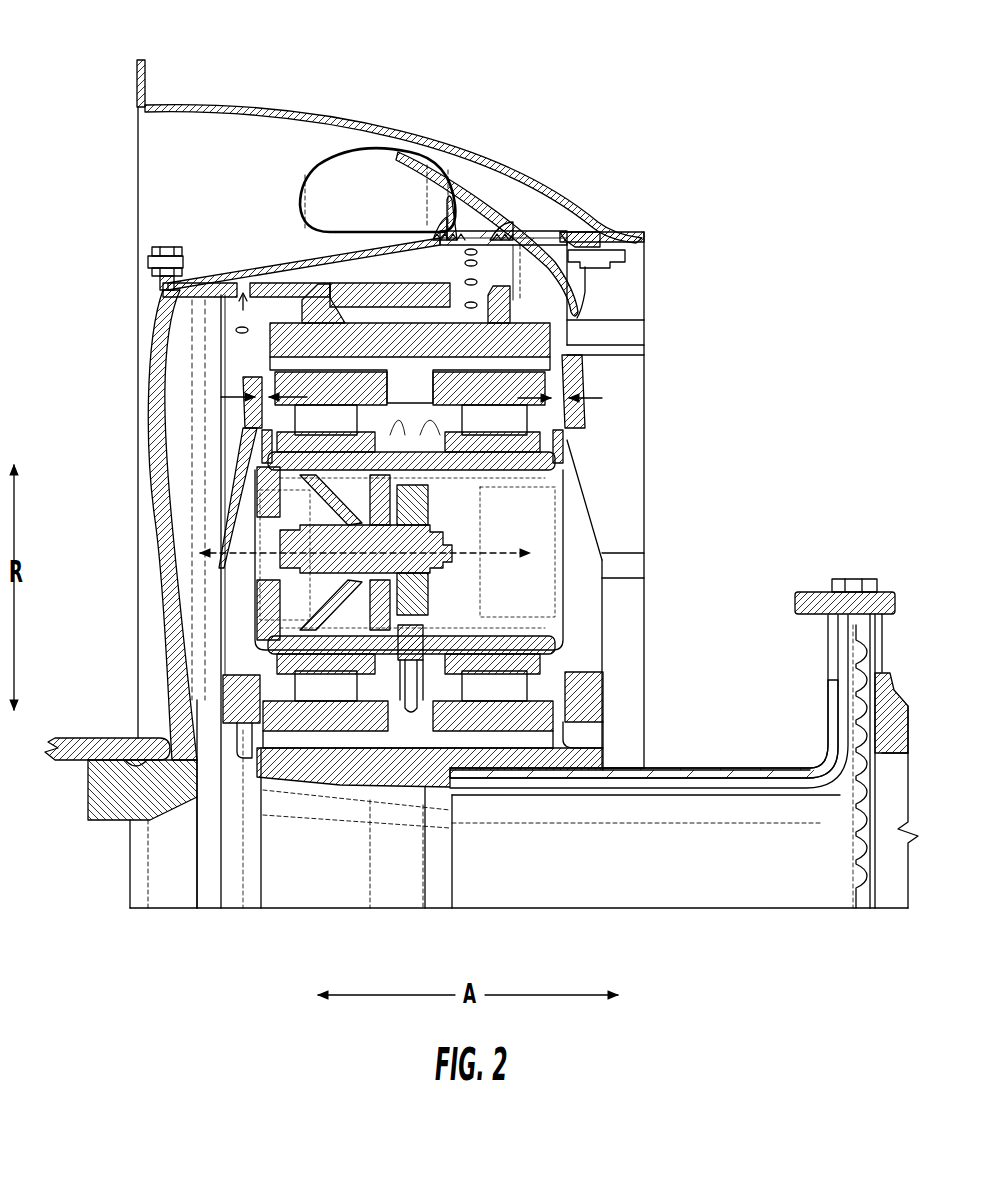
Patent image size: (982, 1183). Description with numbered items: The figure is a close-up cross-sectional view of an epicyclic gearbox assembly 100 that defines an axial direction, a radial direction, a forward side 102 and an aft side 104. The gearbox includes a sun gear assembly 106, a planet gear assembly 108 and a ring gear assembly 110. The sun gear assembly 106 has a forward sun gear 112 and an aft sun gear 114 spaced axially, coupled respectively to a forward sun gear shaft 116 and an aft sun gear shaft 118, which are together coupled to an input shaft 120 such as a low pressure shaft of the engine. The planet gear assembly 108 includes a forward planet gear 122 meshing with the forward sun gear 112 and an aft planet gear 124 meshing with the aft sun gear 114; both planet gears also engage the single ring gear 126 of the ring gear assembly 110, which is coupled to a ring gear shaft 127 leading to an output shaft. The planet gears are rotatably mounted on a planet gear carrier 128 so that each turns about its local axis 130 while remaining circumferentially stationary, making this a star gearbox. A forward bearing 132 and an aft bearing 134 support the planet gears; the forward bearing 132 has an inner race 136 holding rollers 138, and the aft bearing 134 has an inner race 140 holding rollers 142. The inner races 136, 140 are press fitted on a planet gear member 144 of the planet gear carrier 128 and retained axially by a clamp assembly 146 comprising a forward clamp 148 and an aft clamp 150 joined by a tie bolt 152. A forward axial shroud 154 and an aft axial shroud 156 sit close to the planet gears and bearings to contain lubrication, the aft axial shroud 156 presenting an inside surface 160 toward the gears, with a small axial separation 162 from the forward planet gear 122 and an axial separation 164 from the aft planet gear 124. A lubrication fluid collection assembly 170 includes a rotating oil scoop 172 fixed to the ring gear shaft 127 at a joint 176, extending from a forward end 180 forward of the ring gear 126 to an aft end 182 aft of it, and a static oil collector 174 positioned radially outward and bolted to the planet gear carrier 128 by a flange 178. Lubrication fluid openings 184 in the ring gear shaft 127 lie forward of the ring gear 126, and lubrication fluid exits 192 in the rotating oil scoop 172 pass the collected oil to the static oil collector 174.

The epicyclic gearbox assembly 100 is at (653, 66).
The forward side 102 is at (47, 446).
The aft side 104 is at (782, 448).
The sun gear assembly 106 is at (658, 746).
The planet gear assembly 108 is at (634, 493).
The ring gear assembly 110 is at (131, 299).
The forward sun gear 112 is at (305, 765).
The aft sun gear 114 is at (521, 765).
The forward sun gear shaft 116 is at (650, 785).
The aft sun gear shaft 118 is at (723, 766).
The input shaft 120 is at (899, 718).
The forward planet gear 122 is at (283, 383).
The aft planet gear 124 is at (547, 385).
The ring gear 126 is at (252, 300).
The ring gear shaft 127 is at (203, 296).
The planet gear carrier 128 is at (634, 292).
The local axis 130 is at (490, 558).
The forward bearing 132 is at (274, 420).
The aft bearing 134 is at (548, 417).
The inner race 136 is at (278, 445).
The rollers 138 is at (341, 433).
The inner race 140 is at (557, 430).
The rollers 142 is at (509, 433).
The planet gear member 144 is at (427, 460).
The clamp assembly 146 is at (586, 600).
The forward clamp 148 is at (285, 600).
The aft clamp 150 is at (604, 630).
The tie bolt 152 is at (280, 562).
The forward axial shroud 154 is at (240, 522).
The aft axial shroud 156 is at (600, 556).
The inside surface 160 is at (557, 433).
The axial separation 162 is at (221, 397).
The axial separation 164 is at (608, 398).
The lubrication fluid collection assembly 170 is at (504, 186).
The rotating oil scoop 172 is at (325, 333).
The static oil collector 174 is at (393, 152).
The joint 176 is at (182, 243).
The flange 178 is at (588, 235).
The forward end 180 is at (165, 243).
The aft end 182 is at (580, 291).
The lubrication fluid openings 184 is at (243, 306).
The lubrication fluid exits 192 is at (486, 260).